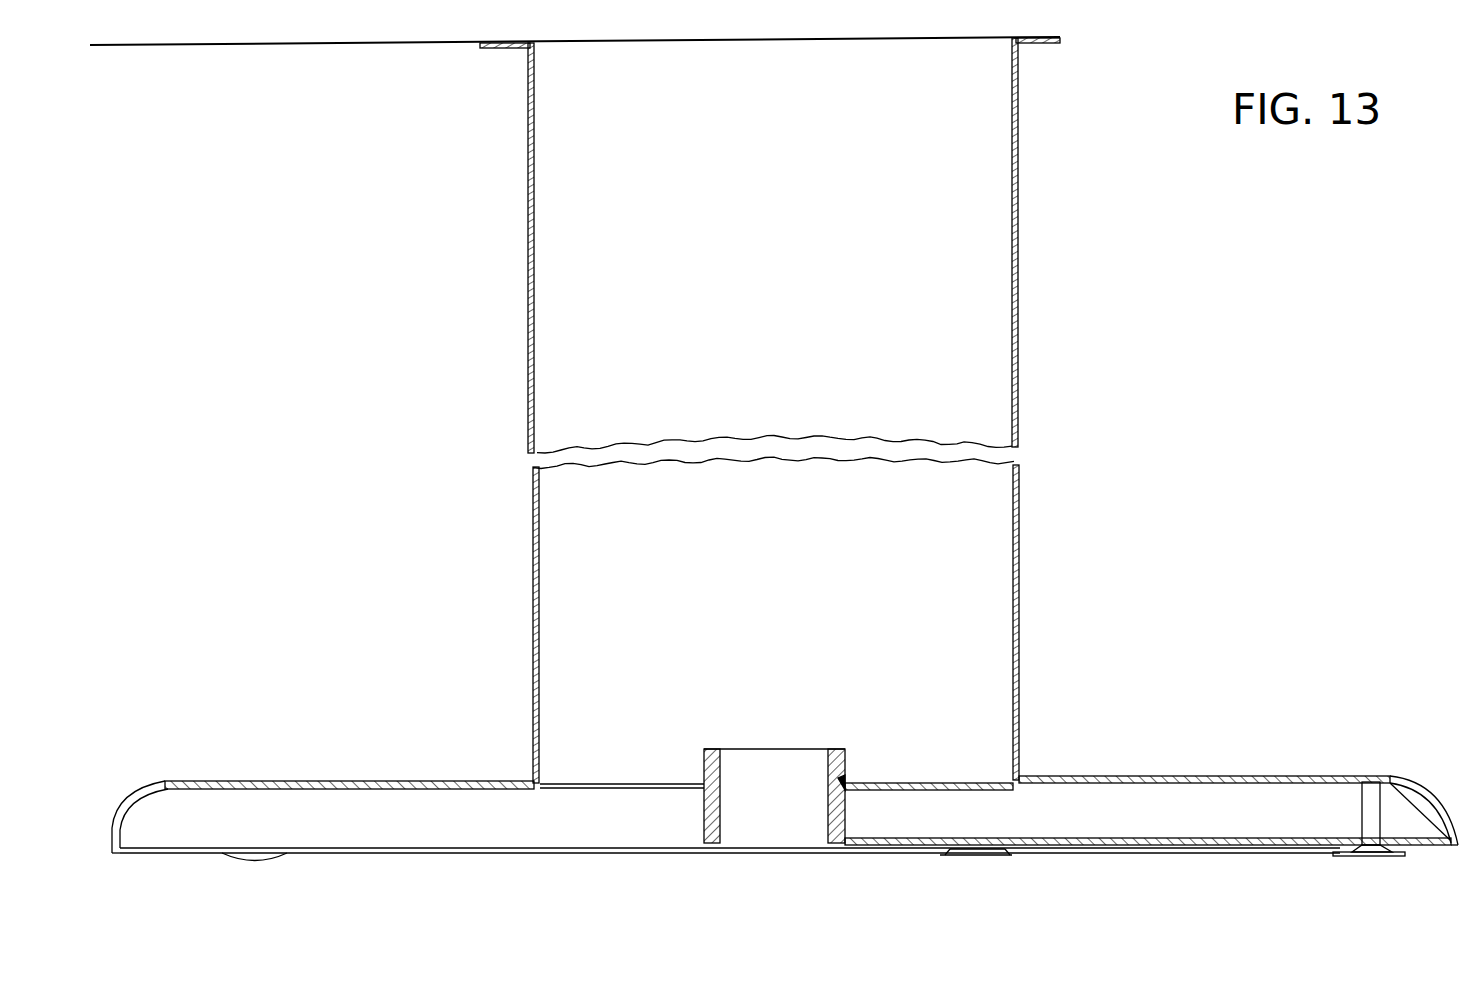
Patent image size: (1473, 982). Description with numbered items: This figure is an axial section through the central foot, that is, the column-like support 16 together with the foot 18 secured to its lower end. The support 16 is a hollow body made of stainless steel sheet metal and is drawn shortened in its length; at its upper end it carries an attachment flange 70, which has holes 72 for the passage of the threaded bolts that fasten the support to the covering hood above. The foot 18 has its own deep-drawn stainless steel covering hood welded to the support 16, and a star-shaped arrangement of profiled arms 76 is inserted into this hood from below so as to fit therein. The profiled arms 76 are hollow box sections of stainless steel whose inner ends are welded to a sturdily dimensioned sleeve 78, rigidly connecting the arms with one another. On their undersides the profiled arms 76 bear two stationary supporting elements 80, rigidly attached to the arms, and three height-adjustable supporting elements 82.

The column-like support 16 is at (1030, 401).
The foot 18 is at (338, 765).
The attachment flange 70 is at (1036, 48).
The holes 72 is at (498, 48).
The profiled arms 76 is at (930, 782).
The sleeve 78 is at (838, 748).
The stationary supporting elements 80 is at (258, 853).
The height-adjustable supporting elements 82 is at (1352, 856).